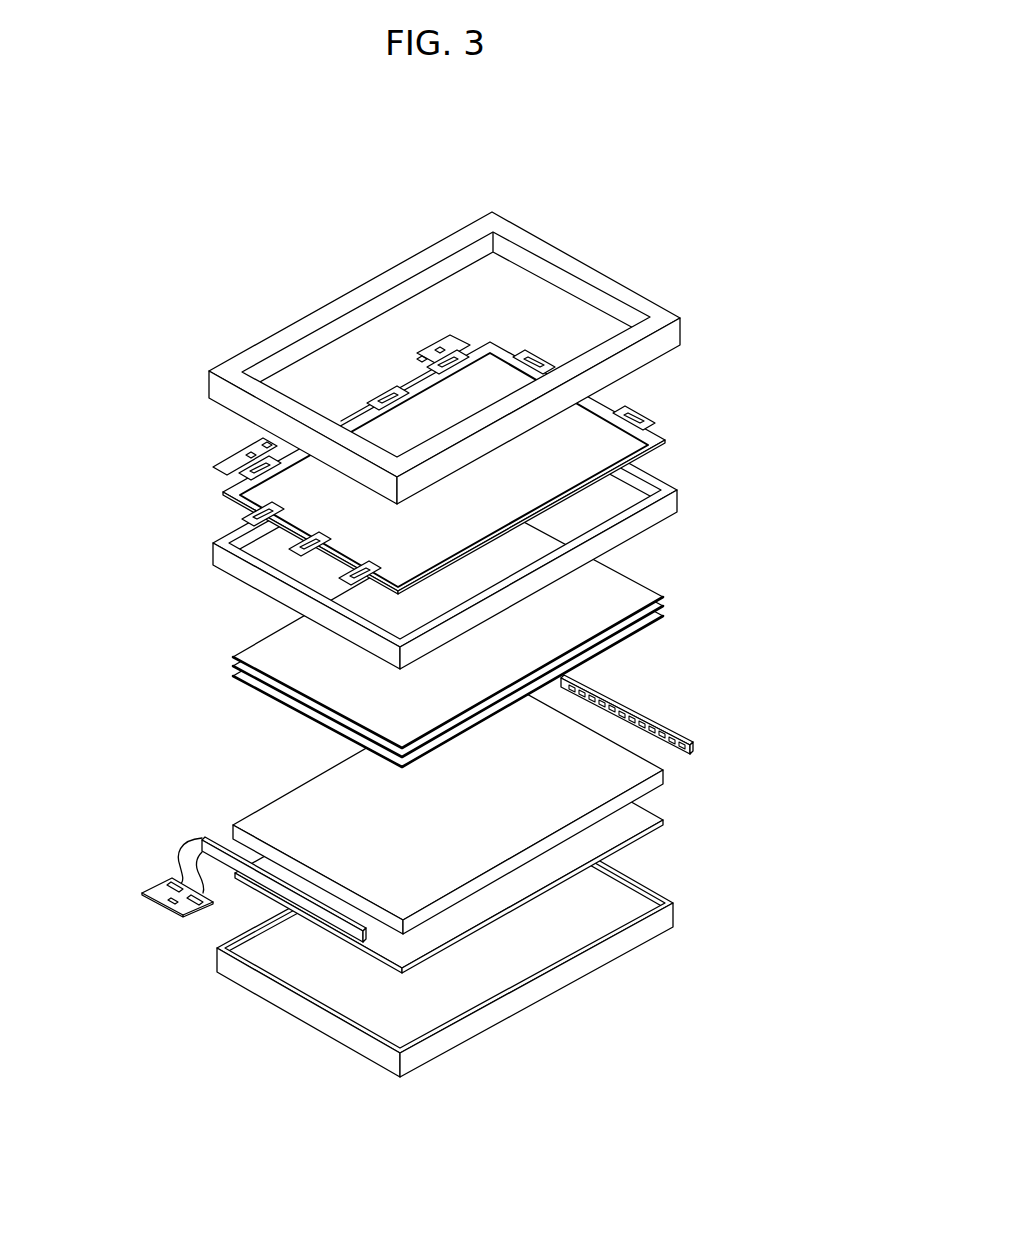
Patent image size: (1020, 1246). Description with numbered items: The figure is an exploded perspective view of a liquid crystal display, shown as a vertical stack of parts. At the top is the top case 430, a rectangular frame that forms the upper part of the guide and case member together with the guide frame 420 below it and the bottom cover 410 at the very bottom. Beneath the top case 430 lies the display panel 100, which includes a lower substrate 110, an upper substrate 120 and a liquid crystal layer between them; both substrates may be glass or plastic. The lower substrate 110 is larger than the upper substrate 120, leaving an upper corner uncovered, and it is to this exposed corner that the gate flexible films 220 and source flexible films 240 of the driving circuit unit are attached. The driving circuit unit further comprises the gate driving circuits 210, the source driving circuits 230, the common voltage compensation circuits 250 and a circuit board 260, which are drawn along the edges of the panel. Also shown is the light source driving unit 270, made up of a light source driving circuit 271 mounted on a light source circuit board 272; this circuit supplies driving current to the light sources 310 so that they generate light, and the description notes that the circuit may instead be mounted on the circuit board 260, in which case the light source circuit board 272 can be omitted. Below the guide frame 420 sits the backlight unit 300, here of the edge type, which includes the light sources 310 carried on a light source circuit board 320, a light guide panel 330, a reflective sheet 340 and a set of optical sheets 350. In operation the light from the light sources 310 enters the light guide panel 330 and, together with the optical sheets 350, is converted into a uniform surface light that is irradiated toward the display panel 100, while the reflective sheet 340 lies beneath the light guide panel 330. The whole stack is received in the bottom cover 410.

The display panel 100 is at (513, 468).
The lower substrate 110 is at (667, 433).
The upper substrate 120 is at (661, 447).
The gate driving circuits 210 is at (637, 410).
The gate flexible films 220 is at (654, 420).
The source driving circuits 230 is at (250, 465).
The source flexible films 240 is at (260, 470).
The common voltage compensation circuits 250 is at (248, 454).
The circuit board 260 is at (238, 458).
The light source driving unit 270 is at (131, 879).
The light source driving circuit 271 is at (166, 882).
The light source circuit board 272 is at (157, 896).
The backlight unit 300 is at (426, 739).
The light sources 310 is at (615, 703).
The light source circuit board 320 is at (600, 689).
The light guide panel 330 is at (666, 779).
The reflective sheet 340 is at (666, 827).
The optical sheets 350 is at (489, 636).
The bottom cover 410 is at (676, 909).
The guide frame 420 is at (680, 504).
The top case 430 is at (683, 321).